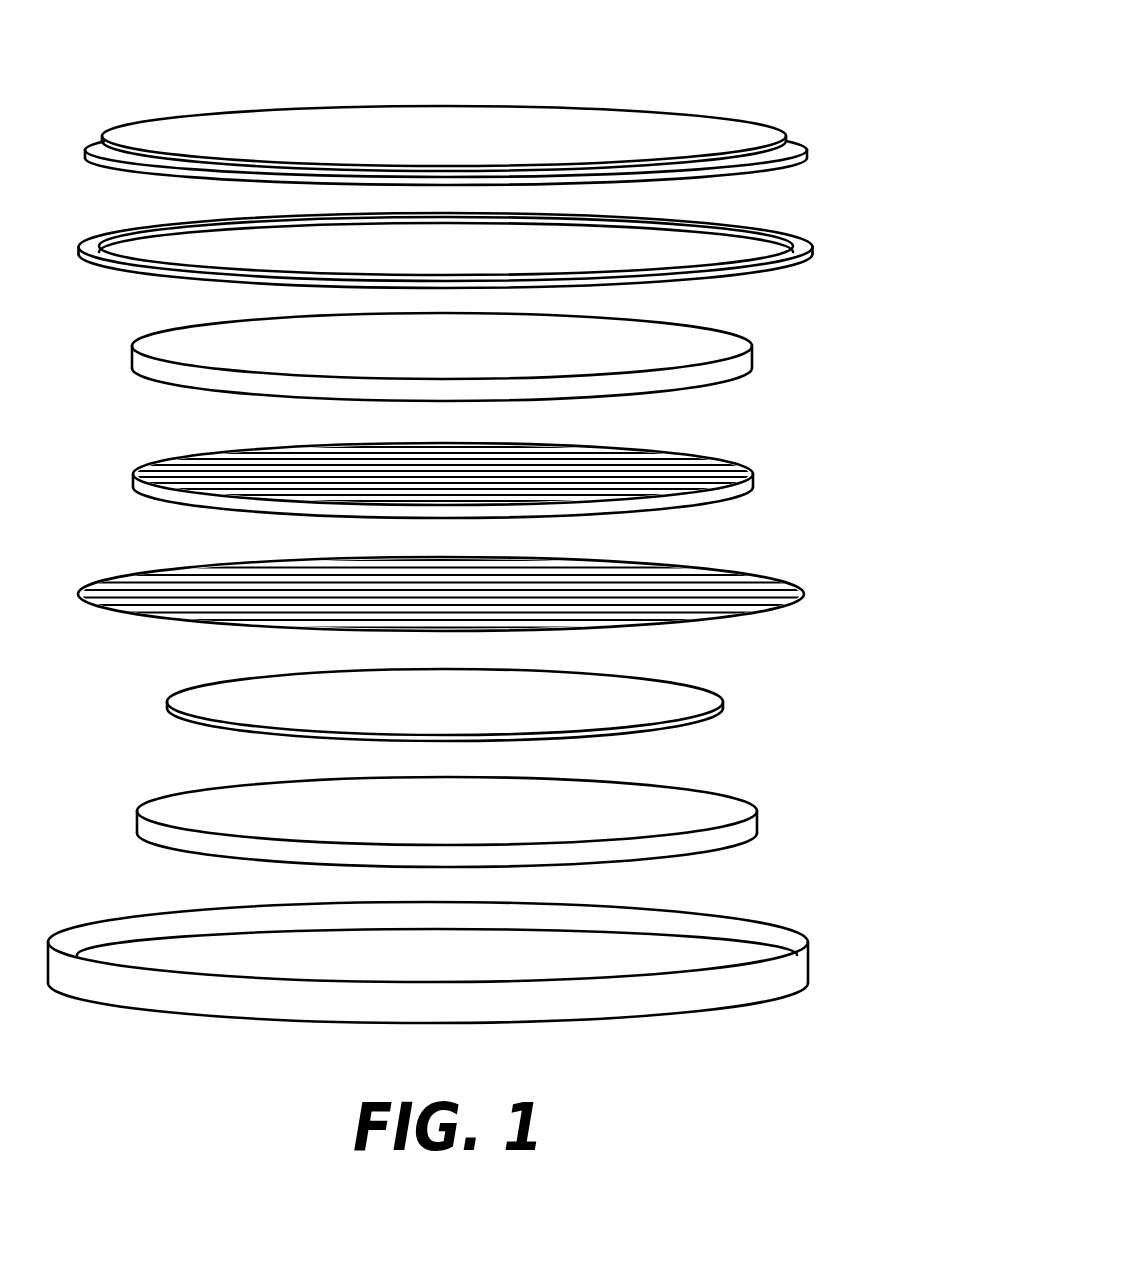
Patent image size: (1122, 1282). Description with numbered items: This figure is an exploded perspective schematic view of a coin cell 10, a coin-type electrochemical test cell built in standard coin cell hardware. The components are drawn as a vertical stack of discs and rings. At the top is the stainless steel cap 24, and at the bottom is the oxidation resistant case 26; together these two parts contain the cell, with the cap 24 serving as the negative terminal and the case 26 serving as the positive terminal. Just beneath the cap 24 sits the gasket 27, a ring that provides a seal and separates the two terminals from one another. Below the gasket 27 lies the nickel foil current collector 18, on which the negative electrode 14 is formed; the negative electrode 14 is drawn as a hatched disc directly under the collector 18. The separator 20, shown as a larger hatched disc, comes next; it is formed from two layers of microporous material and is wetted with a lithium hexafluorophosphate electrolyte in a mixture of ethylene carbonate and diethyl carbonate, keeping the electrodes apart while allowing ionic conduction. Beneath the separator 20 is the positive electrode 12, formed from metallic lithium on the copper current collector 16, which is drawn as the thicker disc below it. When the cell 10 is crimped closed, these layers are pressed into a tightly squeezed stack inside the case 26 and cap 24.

The coin cell 10 is at (661, 78).
The positive electrode 12 is at (680, 695).
The negative electrode 14 is at (722, 471).
The copper current collector 16 is at (705, 807).
The nickel foil current collector 18 is at (712, 347).
The separator 20 is at (748, 592).
The stainless steel cap 24 is at (770, 135).
The oxidation resistant case 26 is at (787, 970).
The gasket 27 is at (797, 247).